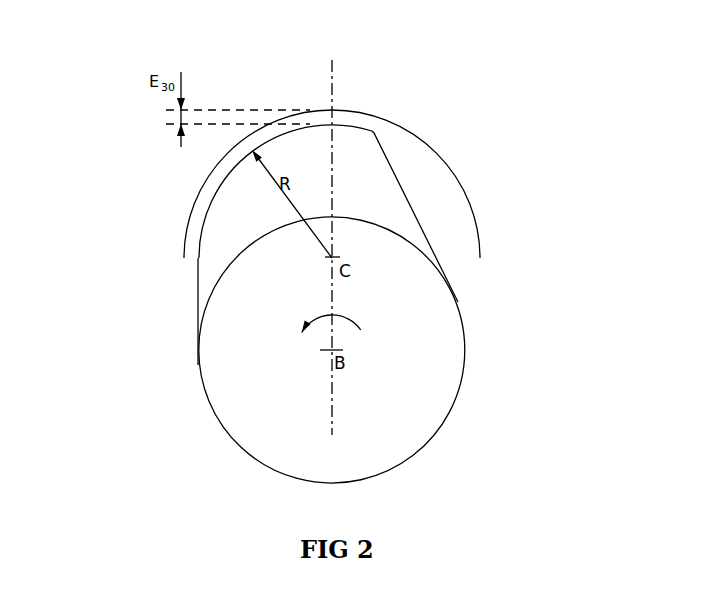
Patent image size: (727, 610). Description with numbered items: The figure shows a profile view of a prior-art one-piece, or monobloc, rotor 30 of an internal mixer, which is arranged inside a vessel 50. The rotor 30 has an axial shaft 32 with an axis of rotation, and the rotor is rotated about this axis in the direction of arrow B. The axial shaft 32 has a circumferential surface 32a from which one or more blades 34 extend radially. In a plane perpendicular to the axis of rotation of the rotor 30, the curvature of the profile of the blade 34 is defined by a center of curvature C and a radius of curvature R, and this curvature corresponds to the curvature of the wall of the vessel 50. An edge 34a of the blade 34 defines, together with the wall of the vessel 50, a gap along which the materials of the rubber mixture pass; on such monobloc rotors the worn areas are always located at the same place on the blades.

The rotor 30 is at (157, 295).
The axial shaft 32 is at (465, 373).
The circumferential surface 32a is at (198, 372).
The blade 34 is at (418, 220).
The edge of the blade 34a is at (333, 124).
The vessel 50 is at (470, 183).